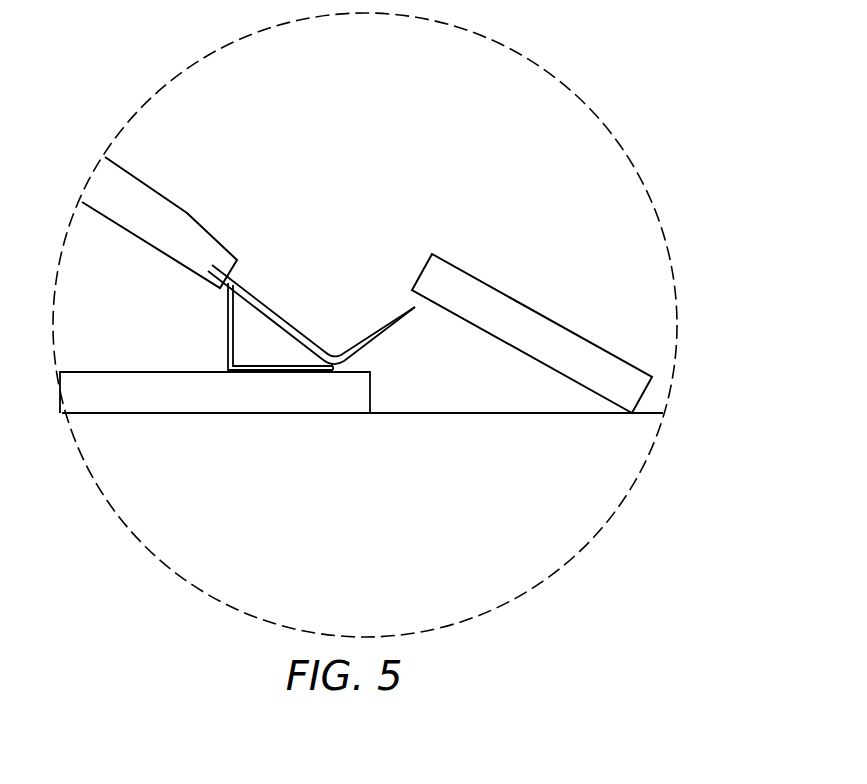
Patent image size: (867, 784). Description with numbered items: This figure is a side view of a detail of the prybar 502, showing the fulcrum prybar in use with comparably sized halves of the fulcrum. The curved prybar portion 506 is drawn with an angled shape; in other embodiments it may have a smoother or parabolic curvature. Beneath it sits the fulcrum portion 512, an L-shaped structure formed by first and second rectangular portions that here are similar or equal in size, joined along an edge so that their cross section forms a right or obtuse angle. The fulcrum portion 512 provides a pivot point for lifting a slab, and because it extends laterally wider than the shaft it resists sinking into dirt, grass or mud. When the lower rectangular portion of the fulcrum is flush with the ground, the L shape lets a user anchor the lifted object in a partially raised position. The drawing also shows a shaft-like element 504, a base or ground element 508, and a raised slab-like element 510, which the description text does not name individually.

The detail of the prybar 502 is at (673, 278).
The tool 504 is at (180, 202).
The curved prybar portion 506 is at (267, 297).
The support block 508 is at (345, 410).
The angled block 510 is at (522, 302).
The fulcrum portion 512 is at (247, 372).